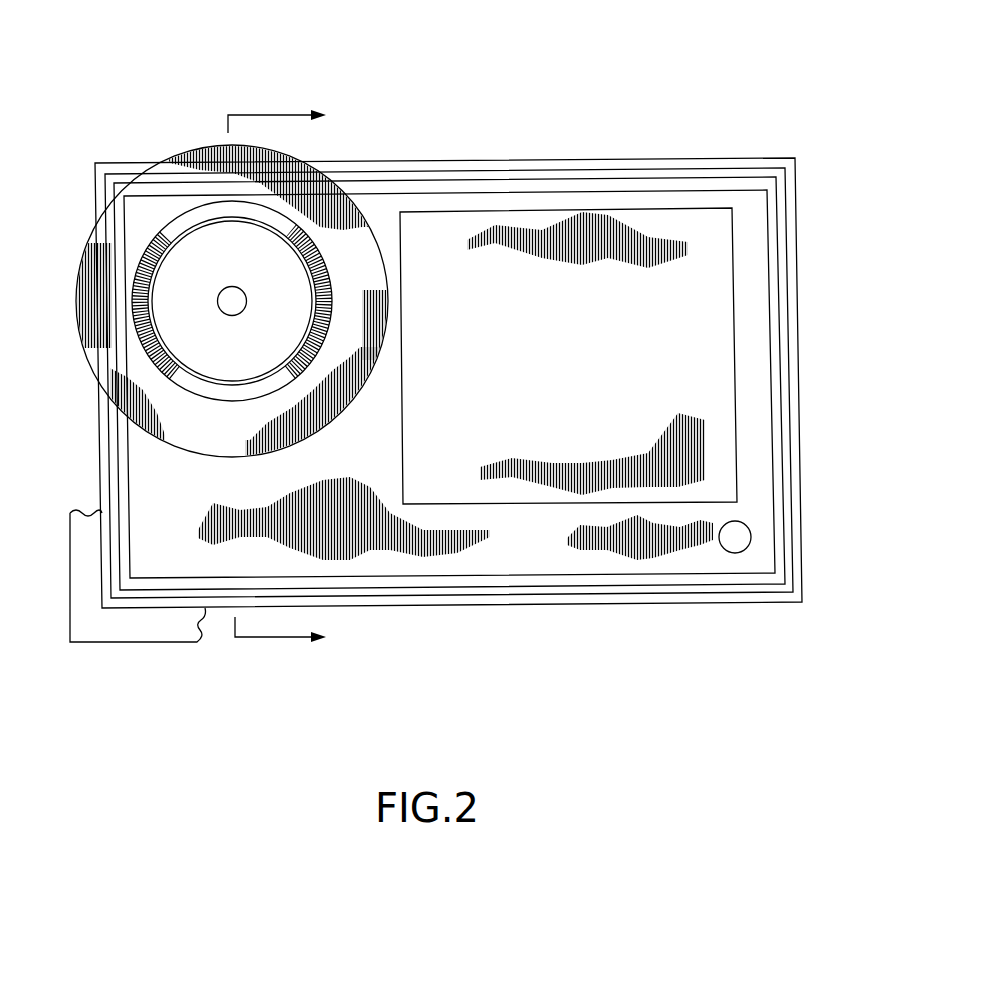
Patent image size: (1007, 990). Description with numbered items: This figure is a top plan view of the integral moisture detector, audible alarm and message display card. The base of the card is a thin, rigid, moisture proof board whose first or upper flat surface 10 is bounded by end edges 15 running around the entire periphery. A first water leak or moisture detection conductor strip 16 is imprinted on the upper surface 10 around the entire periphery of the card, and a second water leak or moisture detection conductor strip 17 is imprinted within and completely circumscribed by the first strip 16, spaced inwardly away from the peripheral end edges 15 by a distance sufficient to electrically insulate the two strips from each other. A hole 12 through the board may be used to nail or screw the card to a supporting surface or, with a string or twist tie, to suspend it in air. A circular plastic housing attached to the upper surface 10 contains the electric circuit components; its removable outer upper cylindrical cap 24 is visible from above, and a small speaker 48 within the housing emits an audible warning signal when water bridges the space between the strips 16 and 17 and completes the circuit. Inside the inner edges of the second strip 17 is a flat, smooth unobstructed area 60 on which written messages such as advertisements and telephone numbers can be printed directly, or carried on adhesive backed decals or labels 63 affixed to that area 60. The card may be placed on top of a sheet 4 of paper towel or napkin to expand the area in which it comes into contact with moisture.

The sheet 4 is at (137, 627).
The upper flat surface 10 is at (437, 202).
The hole 12 is at (735, 537).
The end edges 15 is at (798, 327).
The first moisture detection conductor strip 16 is at (692, 597).
The second moisture detection conductor strip 17 is at (773, 485).
The outer upper cylindrical cap 24 is at (145, 202).
The speaker 48 is at (233, 232).
The unobstructed area 60 is at (542, 545).
The labels 63 is at (665, 227).